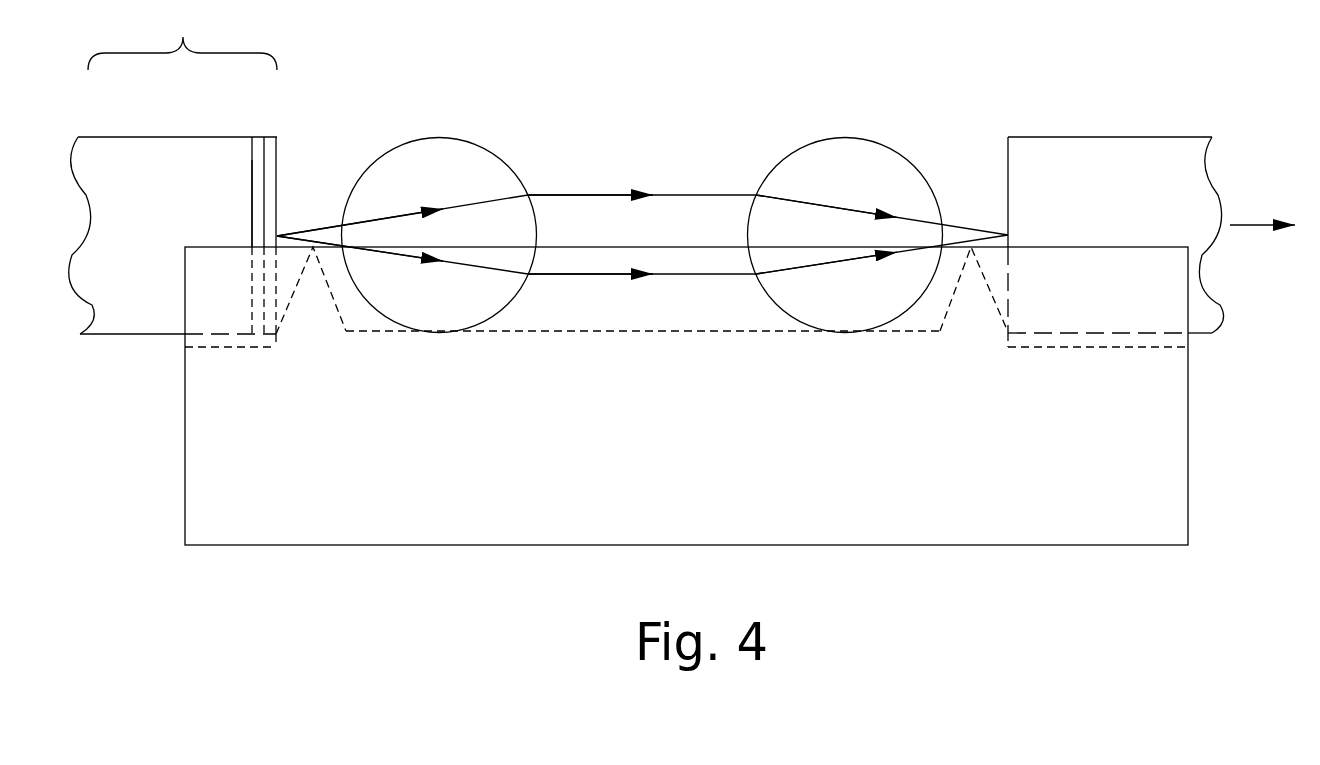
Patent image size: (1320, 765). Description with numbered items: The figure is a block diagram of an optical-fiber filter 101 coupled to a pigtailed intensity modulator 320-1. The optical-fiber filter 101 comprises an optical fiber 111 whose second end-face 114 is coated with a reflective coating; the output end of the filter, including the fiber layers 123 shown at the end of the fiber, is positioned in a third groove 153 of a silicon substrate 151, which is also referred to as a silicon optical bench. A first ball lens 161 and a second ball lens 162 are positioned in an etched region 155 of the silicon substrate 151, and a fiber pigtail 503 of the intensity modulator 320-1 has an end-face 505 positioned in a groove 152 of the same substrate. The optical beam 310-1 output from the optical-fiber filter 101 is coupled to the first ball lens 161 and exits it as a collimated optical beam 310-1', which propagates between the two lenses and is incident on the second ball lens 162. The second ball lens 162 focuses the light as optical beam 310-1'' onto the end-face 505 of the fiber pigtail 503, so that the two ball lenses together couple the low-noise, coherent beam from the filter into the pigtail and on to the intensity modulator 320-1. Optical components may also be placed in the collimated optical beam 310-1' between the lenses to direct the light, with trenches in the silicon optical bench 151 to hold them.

The optical-fiber filter 101 is at (182, 41).
The optical fiber 111 is at (138, 197).
The second end-face 114 is at (252, 188).
The optical waveguide layers 123 is at (262, 137).
The silicon substrate 151 is at (932, 494).
The groove 152 is at (1100, 350).
The third groove 153 is at (232, 350).
The etched region 155 is at (568, 335).
The first ball lens 161 is at (440, 137).
The second ball lens 162 is at (848, 137).
The optical beam 310-1 is at (402, 221).
The collimated optical beam 310-1' is at (642, 207).
The focused optical beam 310-1'' is at (882, 221).
The fiber pigtail 503 is at (1135, 197).
The end-face 505 is at (1008, 150).
The intensity modulator 320-1 is at (1262, 276).